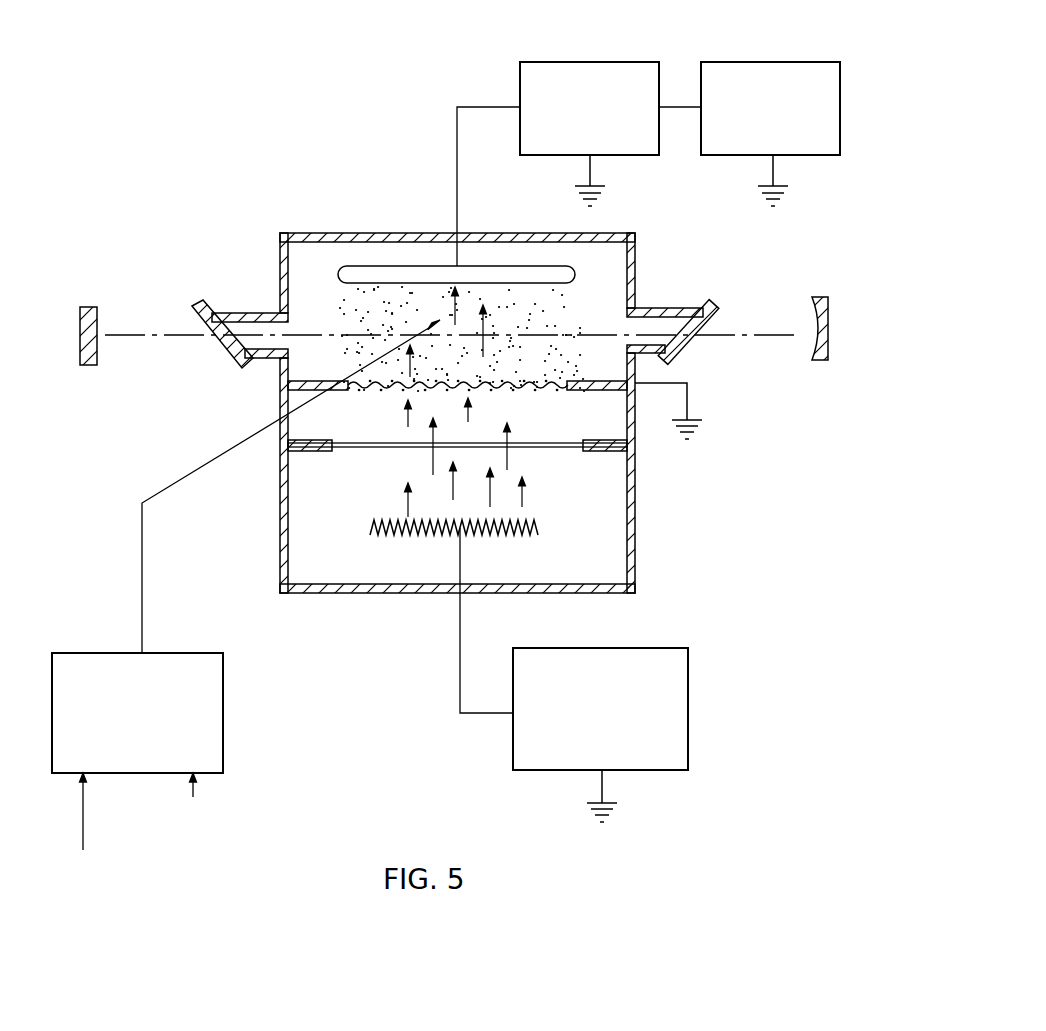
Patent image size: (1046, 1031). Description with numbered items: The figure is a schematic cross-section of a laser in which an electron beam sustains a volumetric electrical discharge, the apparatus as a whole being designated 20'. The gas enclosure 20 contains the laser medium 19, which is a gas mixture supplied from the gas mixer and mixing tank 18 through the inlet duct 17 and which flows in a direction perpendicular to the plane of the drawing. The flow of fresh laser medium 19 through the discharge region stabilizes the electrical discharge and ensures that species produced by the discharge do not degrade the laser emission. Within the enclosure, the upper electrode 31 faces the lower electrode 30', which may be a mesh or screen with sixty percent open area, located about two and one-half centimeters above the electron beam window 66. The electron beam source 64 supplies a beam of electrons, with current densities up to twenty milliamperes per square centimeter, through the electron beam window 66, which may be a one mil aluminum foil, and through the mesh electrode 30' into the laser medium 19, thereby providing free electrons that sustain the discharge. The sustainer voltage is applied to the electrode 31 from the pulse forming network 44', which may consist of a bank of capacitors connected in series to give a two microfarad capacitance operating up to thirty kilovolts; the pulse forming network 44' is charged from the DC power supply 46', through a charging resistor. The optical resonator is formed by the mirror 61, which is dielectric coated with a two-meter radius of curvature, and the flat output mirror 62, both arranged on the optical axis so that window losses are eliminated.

The gas enclosure 20' is at (455, 400).
The gas enclosure 20 is at (455, 410).
The output mirror 62 is at (97, 308).
The mirror 61 is at (829, 297).
The electrode 31 is at (345, 283).
The laser medium 19 is at (521, 313).
The electrode 30' is at (457, 366).
The electron beam window 66 is at (541, 443).
The electron beam source 64 is at (665, 648).
The pulse forming network 44' is at (589, 113).
The DC power supply 46' is at (749, 113).
The inlet duct 17 is at (172, 483).
The gas mixer and mixing tank 18 is at (223, 663).